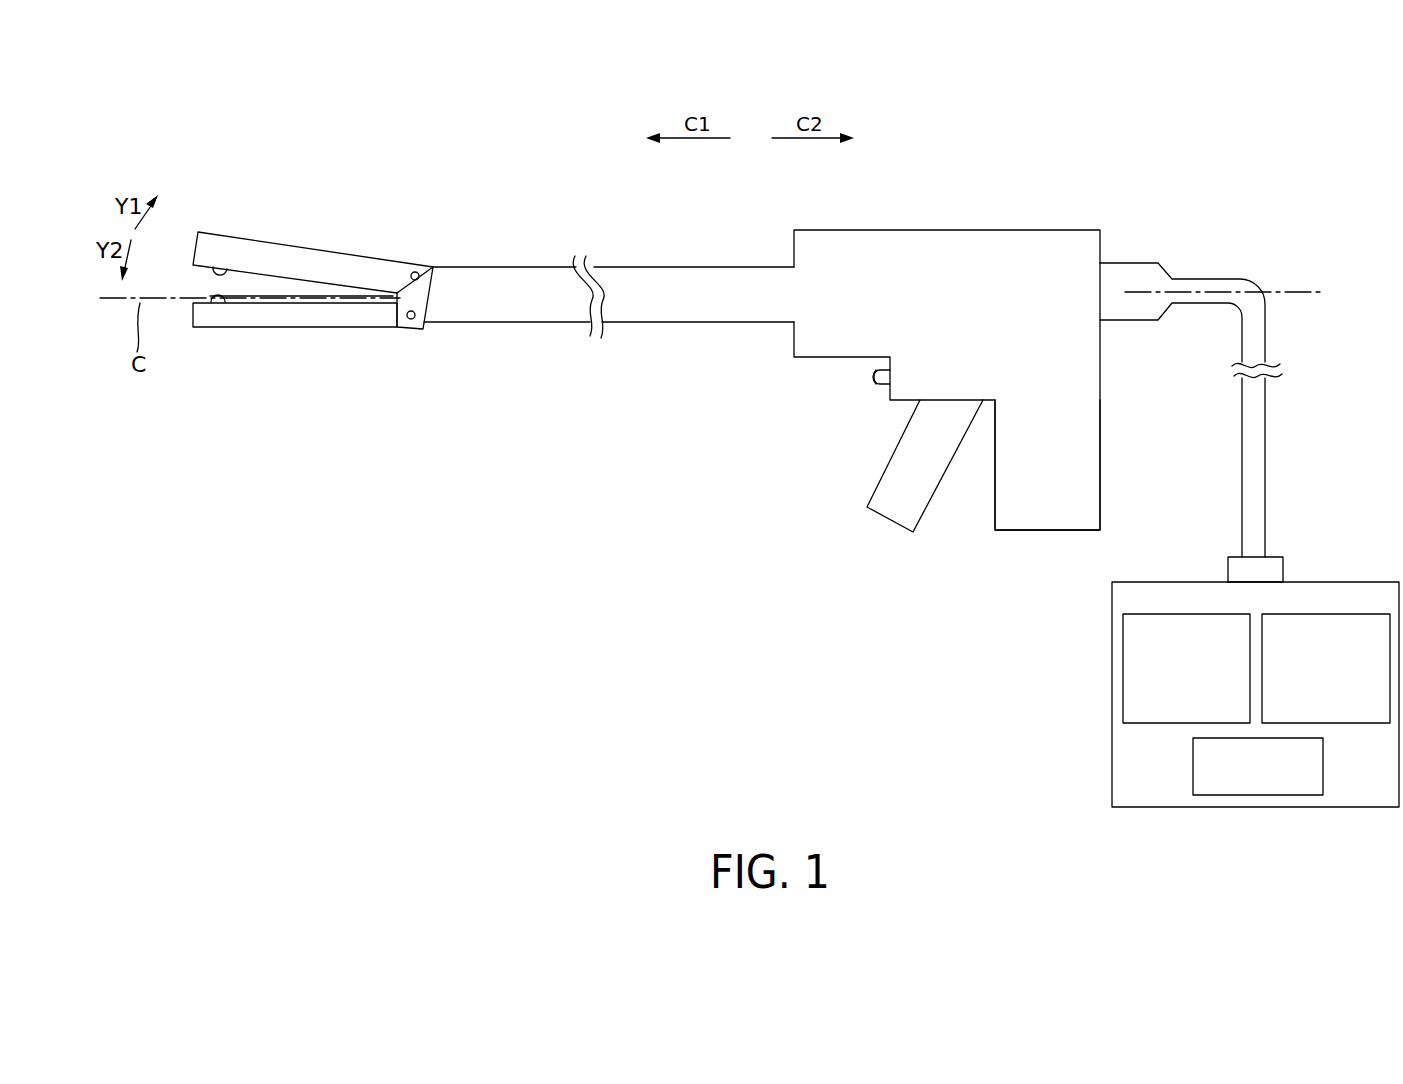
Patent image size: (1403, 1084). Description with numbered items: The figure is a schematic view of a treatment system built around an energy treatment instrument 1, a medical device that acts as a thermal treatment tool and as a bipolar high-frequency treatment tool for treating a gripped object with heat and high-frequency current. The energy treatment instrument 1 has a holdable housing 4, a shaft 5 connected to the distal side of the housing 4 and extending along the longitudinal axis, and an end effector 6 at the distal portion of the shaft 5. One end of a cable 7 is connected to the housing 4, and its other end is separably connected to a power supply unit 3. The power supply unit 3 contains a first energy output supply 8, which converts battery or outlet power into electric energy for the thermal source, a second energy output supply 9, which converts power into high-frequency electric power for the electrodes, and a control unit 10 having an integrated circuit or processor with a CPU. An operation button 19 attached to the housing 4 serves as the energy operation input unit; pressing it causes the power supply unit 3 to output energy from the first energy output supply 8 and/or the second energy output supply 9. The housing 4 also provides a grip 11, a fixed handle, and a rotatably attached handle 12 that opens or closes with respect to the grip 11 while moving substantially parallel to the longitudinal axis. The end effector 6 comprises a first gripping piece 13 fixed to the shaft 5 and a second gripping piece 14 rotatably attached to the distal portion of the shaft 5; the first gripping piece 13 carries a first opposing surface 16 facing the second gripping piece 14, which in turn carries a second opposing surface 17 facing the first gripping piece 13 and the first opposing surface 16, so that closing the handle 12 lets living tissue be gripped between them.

The energy treatment instrument 1 is at (886, 208).
The power supply unit 3 is at (1338, 574).
The housing 4 is at (975, 240).
The shaft 5 is at (690, 282).
The end effector 6 is at (345, 404).
The cable 7 is at (1210, 282).
The first energy output supply 8 is at (1215, 614).
The second energy output supply 9 is at (1352, 614).
The control unit 10 is at (1325, 762).
The grip 11 is at (1085, 447).
The handle 12 is at (918, 492).
The first gripping piece 13 is at (265, 314).
The second gripping piece 14 is at (302, 278).
The first opposing surface 16 is at (217, 292).
The second opposing surface 17 is at (232, 262).
The operation button 19 is at (866, 376).